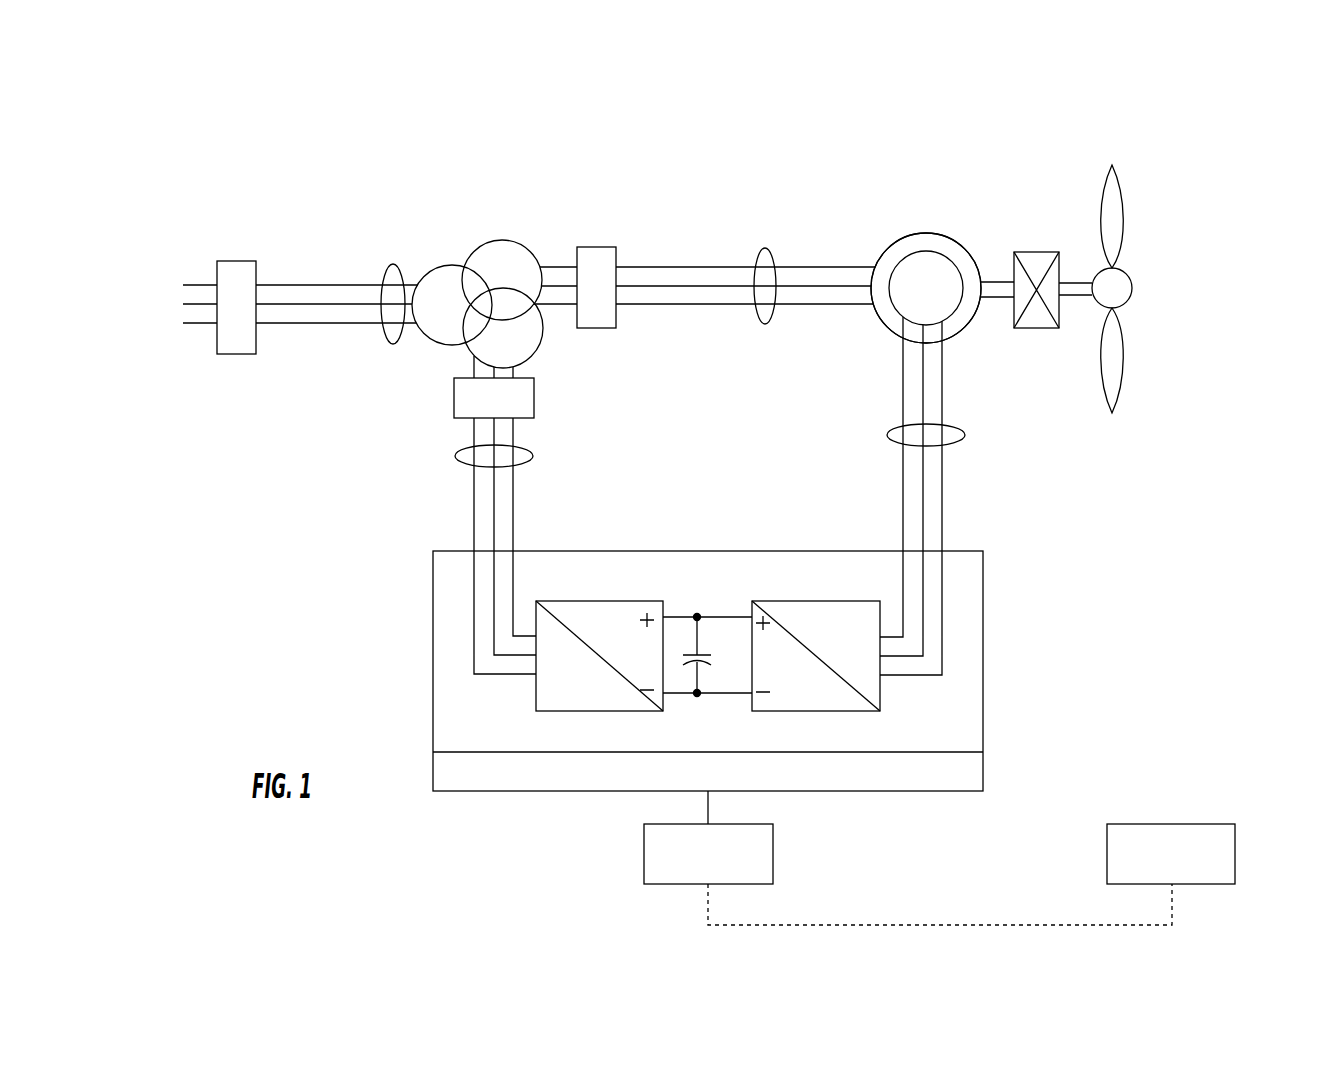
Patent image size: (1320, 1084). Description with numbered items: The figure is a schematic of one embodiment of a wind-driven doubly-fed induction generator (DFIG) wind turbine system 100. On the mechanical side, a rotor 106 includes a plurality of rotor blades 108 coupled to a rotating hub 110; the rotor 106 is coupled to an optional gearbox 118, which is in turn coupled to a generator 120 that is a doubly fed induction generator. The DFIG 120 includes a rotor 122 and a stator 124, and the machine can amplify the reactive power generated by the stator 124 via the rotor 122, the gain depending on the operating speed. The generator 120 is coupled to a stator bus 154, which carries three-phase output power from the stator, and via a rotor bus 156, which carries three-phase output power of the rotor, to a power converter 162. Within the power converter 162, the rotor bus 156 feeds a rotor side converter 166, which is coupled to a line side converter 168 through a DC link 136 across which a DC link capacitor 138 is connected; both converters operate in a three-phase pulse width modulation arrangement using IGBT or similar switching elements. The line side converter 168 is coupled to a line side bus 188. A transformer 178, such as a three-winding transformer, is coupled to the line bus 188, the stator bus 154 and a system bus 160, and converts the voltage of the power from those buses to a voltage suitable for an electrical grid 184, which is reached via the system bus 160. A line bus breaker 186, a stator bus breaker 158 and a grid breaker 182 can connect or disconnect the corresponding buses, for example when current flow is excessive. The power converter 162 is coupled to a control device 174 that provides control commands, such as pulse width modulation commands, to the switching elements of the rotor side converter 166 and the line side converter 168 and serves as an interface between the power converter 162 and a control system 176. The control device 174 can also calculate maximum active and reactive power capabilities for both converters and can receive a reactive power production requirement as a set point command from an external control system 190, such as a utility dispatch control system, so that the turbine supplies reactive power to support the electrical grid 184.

The DFIG wind turbine system 100 is at (806, 158).
The rotor 106 is at (1182, 223).
The rotor blades 108 is at (1123, 212).
The rotating hub 110 is at (1133, 289).
The gearbox 118 is at (1036, 252).
The generator 120 is at (920, 227).
The rotor 122 is at (955, 263).
The stator 124 is at (884, 323).
The DC link 136 is at (704, 617).
The DC link capacitor 138 is at (697, 670).
The stator bus 154 is at (765, 250).
The rotor bus 156 is at (966, 436).
The stator bus breaker 158 is at (600, 247).
The system bus 160 is at (393, 264).
The power converter 162 is at (983, 619).
The rotor side converter 166 is at (880, 692).
The line side converter 168 is at (536, 692).
The control device 174 is at (983, 783).
The control system 176 is at (773, 862).
The transformer 178 is at (502, 241).
The grid breaker 182 is at (240, 261).
The electrical grid 184 is at (153, 294).
The line bus breaker 186 is at (454, 400).
The line side bus 188 is at (456, 456).
The external control system 190 is at (1235, 862).